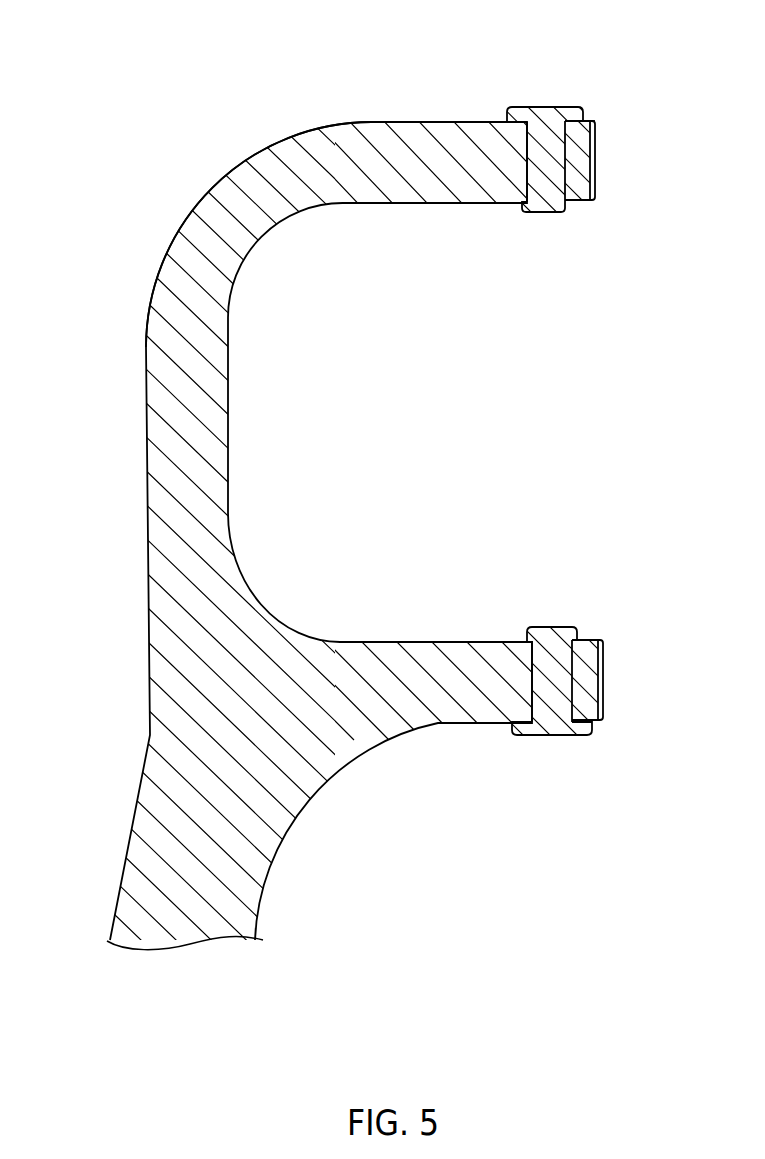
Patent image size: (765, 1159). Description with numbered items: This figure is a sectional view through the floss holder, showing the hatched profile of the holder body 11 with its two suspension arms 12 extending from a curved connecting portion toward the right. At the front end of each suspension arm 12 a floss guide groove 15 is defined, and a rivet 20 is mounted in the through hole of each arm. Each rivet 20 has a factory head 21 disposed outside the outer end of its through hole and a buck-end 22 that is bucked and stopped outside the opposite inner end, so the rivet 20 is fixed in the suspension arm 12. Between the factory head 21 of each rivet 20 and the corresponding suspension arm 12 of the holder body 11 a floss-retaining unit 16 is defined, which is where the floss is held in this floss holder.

The holder body 11 is at (168, 400).
The suspension arm 12 is at (332, 132).
The floss guide groove 15 is at (596, 163).
The floss-retaining unit 16 is at (593, 118).
The rivet 20 is at (549, 145).
The factory head 21 is at (562, 105).
The buck-end 22 is at (547, 214).